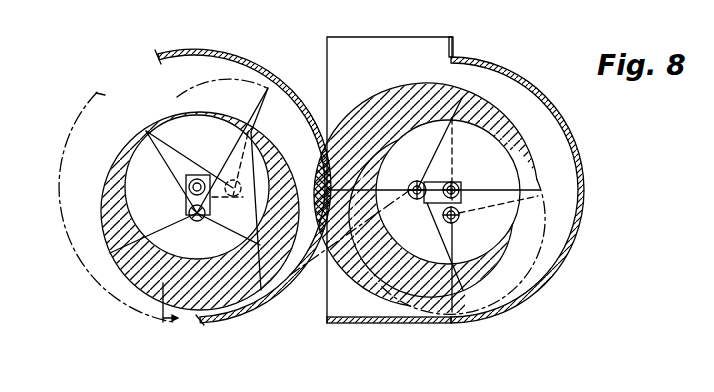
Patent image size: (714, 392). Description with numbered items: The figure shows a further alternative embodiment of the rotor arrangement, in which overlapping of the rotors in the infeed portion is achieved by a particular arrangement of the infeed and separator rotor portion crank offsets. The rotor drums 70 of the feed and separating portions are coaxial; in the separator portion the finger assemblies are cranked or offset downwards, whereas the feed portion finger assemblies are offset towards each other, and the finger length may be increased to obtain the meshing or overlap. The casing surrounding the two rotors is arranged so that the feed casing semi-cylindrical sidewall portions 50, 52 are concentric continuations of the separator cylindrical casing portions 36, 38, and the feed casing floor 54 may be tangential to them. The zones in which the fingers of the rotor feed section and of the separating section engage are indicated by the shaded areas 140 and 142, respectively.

The separator cylindrical casing portion 36 is at (393, 77).
The separator cylindrical casing portion 38 is at (200, 53).
The feed casing semi-cylindrical sidewall portion 50 is at (574, 243).
The feed casing semi-cylindrical sidewall portion 52 is at (97, 277).
The feed casing floor 54 is at (360, 325).
The rotor drum 70 is at (183, 236).
The engagement zone of rotor feed section fingers 140 is at (358, 267).
The engagement zone of rotor separating section fingers 142 is at (163, 320).